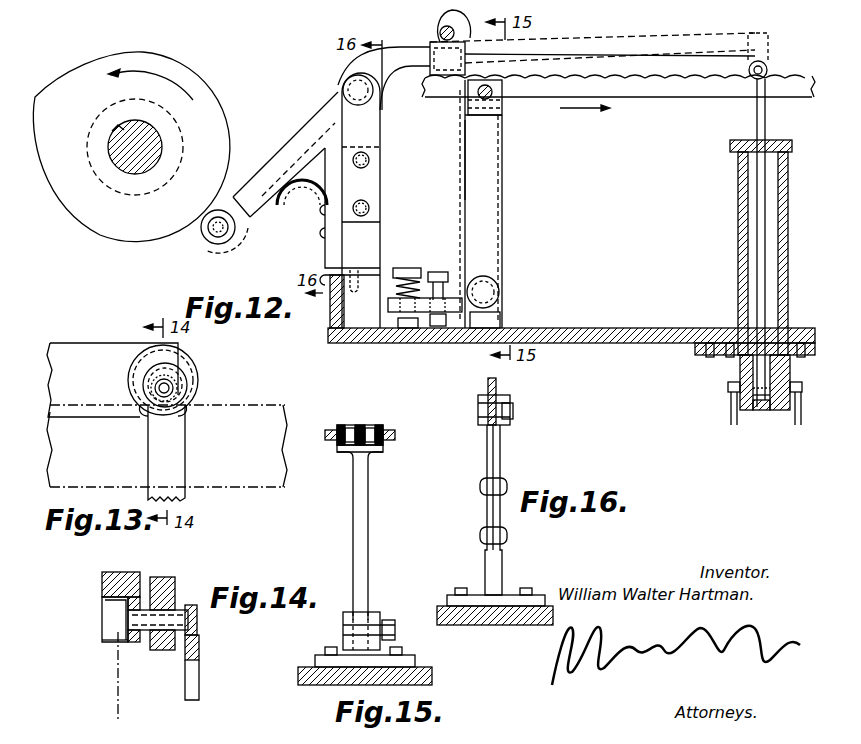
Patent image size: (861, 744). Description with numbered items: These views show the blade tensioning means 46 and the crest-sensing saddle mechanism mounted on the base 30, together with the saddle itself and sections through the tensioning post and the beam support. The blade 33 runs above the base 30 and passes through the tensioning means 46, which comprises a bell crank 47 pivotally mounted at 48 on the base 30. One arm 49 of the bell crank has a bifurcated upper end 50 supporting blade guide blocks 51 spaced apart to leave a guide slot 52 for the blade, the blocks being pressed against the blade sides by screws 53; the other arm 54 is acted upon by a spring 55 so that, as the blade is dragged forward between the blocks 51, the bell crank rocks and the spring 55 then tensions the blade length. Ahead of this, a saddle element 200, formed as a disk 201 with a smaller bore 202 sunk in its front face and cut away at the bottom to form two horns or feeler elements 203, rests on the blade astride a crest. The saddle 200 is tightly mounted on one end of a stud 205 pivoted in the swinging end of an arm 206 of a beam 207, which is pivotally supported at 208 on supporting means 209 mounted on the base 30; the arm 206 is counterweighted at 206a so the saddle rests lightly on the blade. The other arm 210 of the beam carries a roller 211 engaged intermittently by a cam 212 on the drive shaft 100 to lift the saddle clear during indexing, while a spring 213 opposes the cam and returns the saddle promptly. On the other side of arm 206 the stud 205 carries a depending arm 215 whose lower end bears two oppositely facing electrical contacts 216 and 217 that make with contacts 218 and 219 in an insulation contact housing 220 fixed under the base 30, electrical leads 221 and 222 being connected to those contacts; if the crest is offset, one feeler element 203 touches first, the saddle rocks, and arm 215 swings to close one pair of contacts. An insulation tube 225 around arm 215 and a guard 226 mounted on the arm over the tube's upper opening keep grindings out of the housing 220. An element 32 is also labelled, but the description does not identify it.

In FIG. 12, the drive shaft 100 is at (125, 165).
In FIG. 12, the cam 212 is at (35, 97).
In FIG. 12, the roller 211 is at (205, 240).
In FIG. 12, the other arm 210 is at (282, 132).
In FIG. 12, the spring 213 is at (298, 208).
In FIG. 12, the pivot 208 is at (346, 84).
In FIG. 16, the pivot 208 is at (478, 410).
In FIG. 12, the supporting means 209 is at (374, 142).
In FIG. 16, the supporting means 209 is at (502, 455).
In FIG. 12, the beam 207 is at (397, 45).
In FIG. 16, the beam 207 is at (497, 388).
In FIG. 12, the counterweight 206a is at (446, 26).
In FIG. 12, the arm 206 is at (606, 60).
In FIG. 13, the arm 206 is at (103, 333).
In FIG. 14, the arm 206 is at (175, 578).
In FIG. 12, the saddle element 200 is at (770, 64).
In FIG. 13, the saddle element 200 is at (197, 374).
In FIG. 14, the saddle element 200 is at (122, 575).
In FIG. 13, the disk 201 is at (175, 360).
In FIG. 14, the disk 201 is at (110, 572).
In FIG. 13, the bore 202 is at (143, 380).
In FIG. 14, the bore 202 is at (104, 600).
In FIG. 13, the feeler elements 203 is at (140, 412).
In FIG. 14, the feeler elements 203 is at (104, 637).
In FIG. 14, the stud 205 is at (172, 650).
In FIG. 12, the depending arm 215 is at (757, 262).
In FIG. 13, the depending arm 215 is at (185, 462).
In FIG. 14, the depending arm 215 is at (200, 676).
In FIG. 12, the blade 33 is at (622, 99).
In FIG. 13, the blade 33 is at (236, 406).
In FIG. 14, the blade 33 is at (115, 689).
In FIG. 15, the blade 33 is at (350, 450).
In FIG. 12, the wall 32 is at (331, 316).
In FIG. 12, the base 30 is at (590, 336).
In FIG. 15, the base 30 is at (312, 685).
In FIG. 16, the base 30 is at (500, 620).
In FIG. 12, the bifurcated upper end 50 is at (504, 107).
In FIG. 15, the bifurcated upper end 50 is at (342, 425).
In FIG. 15, the blade guide blocks 51 is at (350, 425).
In FIG. 15, the guide slot 52 is at (360, 425).
In FIG. 12, the screws 53 is at (478, 97).
In FIG. 15, the screws 53 is at (392, 437).
In FIG. 12, the other arm 54 is at (428, 312).
In FIG. 12, the spring 55 is at (402, 270).
In FIG. 12, the blade tensioning means 46 is at (505, 228).
In FIG. 15, the blade tensioning means 46 is at (368, 515).
In FIG. 12, the bell crank 47 is at (487, 206).
In FIG. 12, the pivot 48 is at (500, 292).
In FIG. 15, the pivot 48 is at (343, 630).
In FIG. 12, the arm 49 is at (505, 165).
In FIG. 15, the arm 49 is at (369, 485).
In FIG. 12, the guard 226 is at (740, 140).
In FIG. 12, the insulation tube 225 is at (738, 212).
In FIG. 12, the electrical contact 216 is at (740, 372).
In FIG. 12, the electrical contact 217 is at (762, 404).
In FIG. 12, the contact 218 is at (760, 410).
In FIG. 12, the contact 219 is at (786, 408).
In FIG. 12, the insulation contact housing 220 is at (725, 383).
In FIG. 12, the electrical lead 221 is at (730, 412).
In FIG. 12, the electrical lead 222 is at (798, 420).